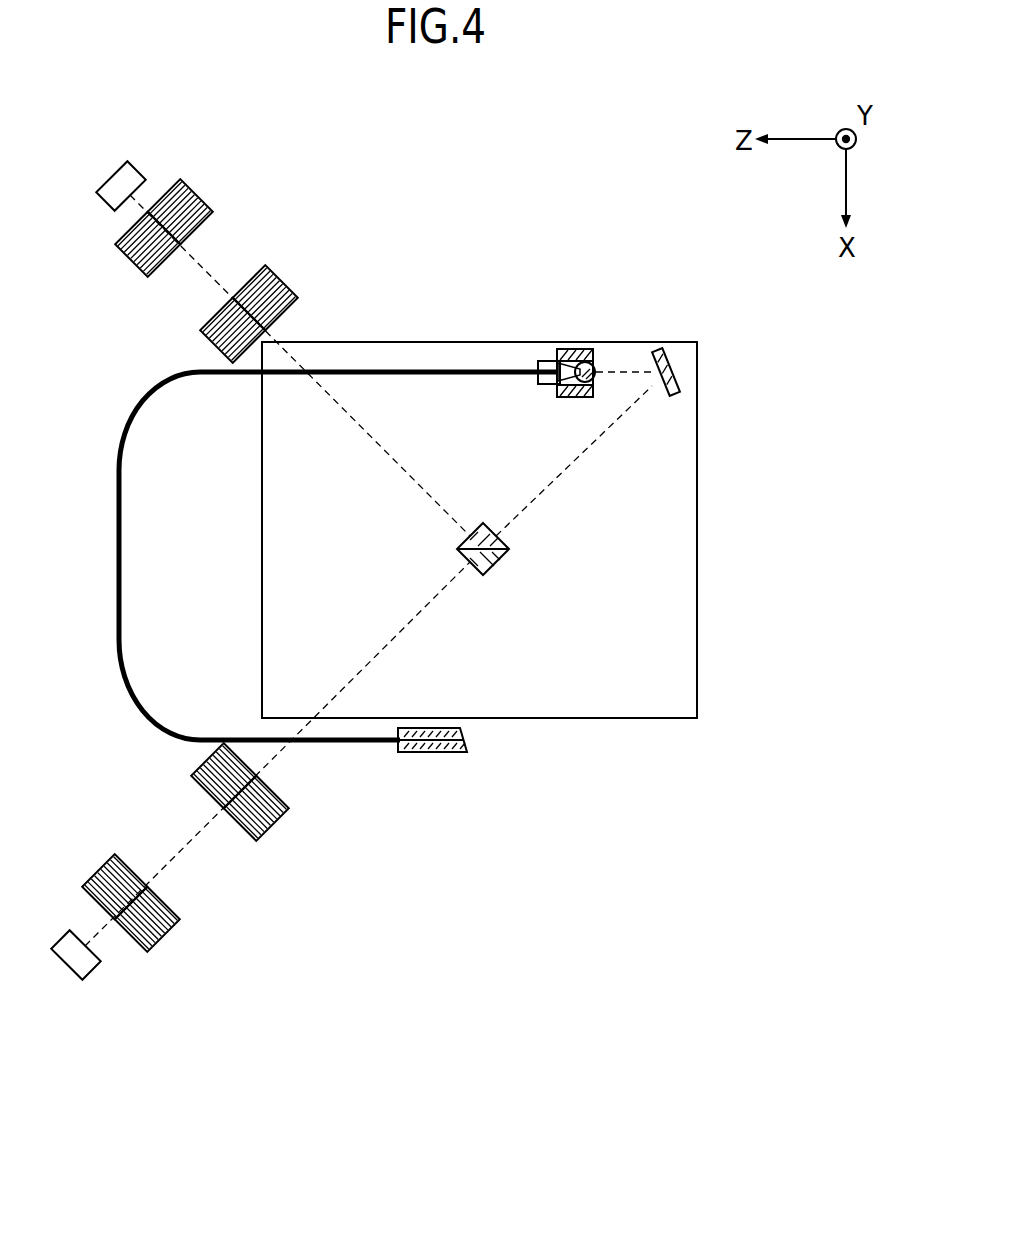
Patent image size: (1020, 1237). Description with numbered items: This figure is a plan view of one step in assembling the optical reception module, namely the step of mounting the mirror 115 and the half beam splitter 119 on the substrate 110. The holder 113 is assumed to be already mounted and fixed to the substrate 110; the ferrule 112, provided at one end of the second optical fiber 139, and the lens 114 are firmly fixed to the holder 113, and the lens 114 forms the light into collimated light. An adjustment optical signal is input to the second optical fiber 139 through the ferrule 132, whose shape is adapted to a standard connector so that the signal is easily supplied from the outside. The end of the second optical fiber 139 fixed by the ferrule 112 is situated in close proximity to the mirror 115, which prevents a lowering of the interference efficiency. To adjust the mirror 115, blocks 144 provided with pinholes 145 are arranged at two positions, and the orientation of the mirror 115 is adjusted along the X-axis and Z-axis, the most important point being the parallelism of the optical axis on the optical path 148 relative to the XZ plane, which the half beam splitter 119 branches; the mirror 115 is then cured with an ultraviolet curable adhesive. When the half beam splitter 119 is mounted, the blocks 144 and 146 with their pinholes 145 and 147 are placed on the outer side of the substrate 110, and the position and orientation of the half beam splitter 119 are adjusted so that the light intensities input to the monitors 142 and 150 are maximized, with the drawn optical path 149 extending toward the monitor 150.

The substrate 110 is at (682, 582).
The ferrule 112 is at (545, 362).
The holder 113 is at (575, 349).
The lens 114 is at (593, 362).
The mirror 115 is at (680, 386).
The half beam splitter 119 is at (505, 557).
The ferrule 132 is at (432, 753).
The second optical fiber 139 is at (119, 545).
The monitor 142 is at (80, 981).
The block 144 is at (262, 827).
The pinhole 145 is at (213, 810).
The block 146 is at (130, 247).
The pinhole 147 is at (183, 243).
The optical path 148 is at (630, 400).
The optical axis 149 is at (392, 462).
The monitor 150 is at (142, 172).